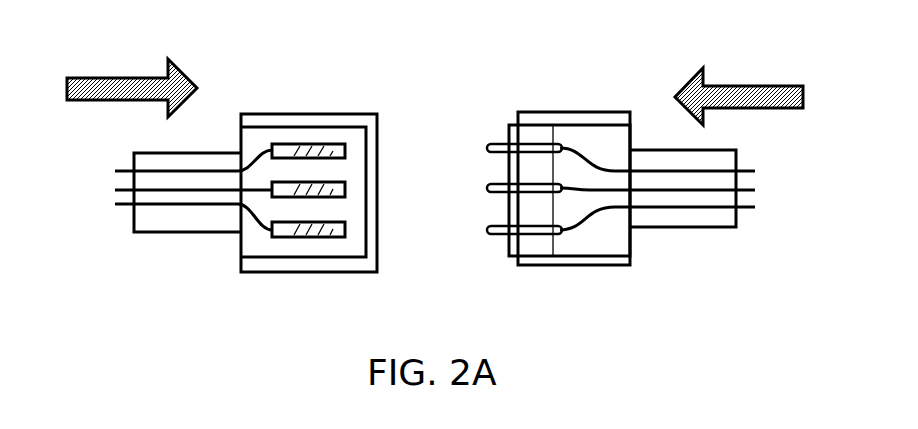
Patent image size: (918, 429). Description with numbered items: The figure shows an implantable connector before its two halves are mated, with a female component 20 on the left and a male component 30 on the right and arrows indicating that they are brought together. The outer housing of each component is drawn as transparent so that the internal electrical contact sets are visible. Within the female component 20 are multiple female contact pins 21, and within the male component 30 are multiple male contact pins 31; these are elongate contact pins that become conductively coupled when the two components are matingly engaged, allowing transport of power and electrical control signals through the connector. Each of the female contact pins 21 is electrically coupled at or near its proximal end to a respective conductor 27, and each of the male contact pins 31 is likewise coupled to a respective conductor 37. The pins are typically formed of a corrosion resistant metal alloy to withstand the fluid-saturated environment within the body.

The female component 20 is at (235, 293).
The female contact pins 21 is at (330, 147).
The conductor 27 is at (190, 168).
The male component 30 is at (642, 293).
The male contact pins 31 is at (528, 143).
The conductor 37 is at (602, 166).